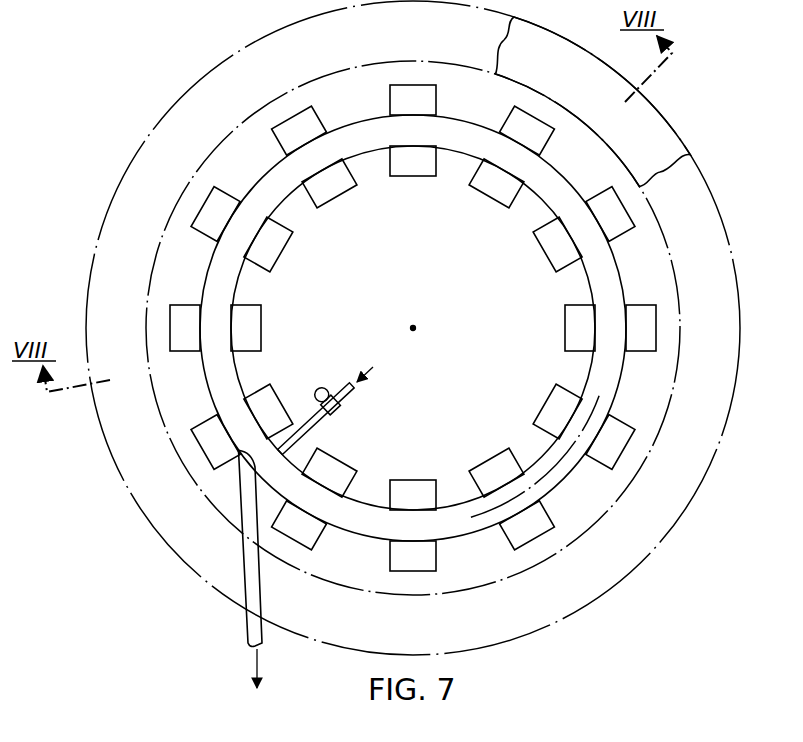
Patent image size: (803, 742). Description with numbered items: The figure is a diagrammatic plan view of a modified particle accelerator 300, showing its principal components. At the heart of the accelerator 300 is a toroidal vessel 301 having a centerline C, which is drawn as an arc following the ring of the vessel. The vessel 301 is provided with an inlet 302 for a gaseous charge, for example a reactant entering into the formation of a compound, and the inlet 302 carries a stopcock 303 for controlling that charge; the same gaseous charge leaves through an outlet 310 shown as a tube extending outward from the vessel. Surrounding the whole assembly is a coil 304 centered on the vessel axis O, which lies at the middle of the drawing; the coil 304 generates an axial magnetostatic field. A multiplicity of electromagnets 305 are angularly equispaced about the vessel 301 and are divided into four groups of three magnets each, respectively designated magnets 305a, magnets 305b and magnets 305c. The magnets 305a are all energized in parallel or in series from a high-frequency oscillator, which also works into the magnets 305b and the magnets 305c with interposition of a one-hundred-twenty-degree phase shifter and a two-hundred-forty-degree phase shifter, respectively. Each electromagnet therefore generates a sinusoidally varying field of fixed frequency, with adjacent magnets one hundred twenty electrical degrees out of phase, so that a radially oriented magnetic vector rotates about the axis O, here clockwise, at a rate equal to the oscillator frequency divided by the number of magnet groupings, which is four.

The particle accelerator 300 is at (131, 137).
The toroidal vessel 301 is at (617, 386).
The inlet 302 is at (362, 391).
The stopcock 303 is at (342, 406).
The coil 304 is at (665, 120).
The electromagnets 305 is at (193, 220).
The magnets 305a is at (338, 190).
The magnets 305b is at (420, 170).
The magnets 305c is at (487, 190).
The outlet 310 is at (249, 630).
The vessel axis O is at (416, 328).
The centerline C is at (550, 478).